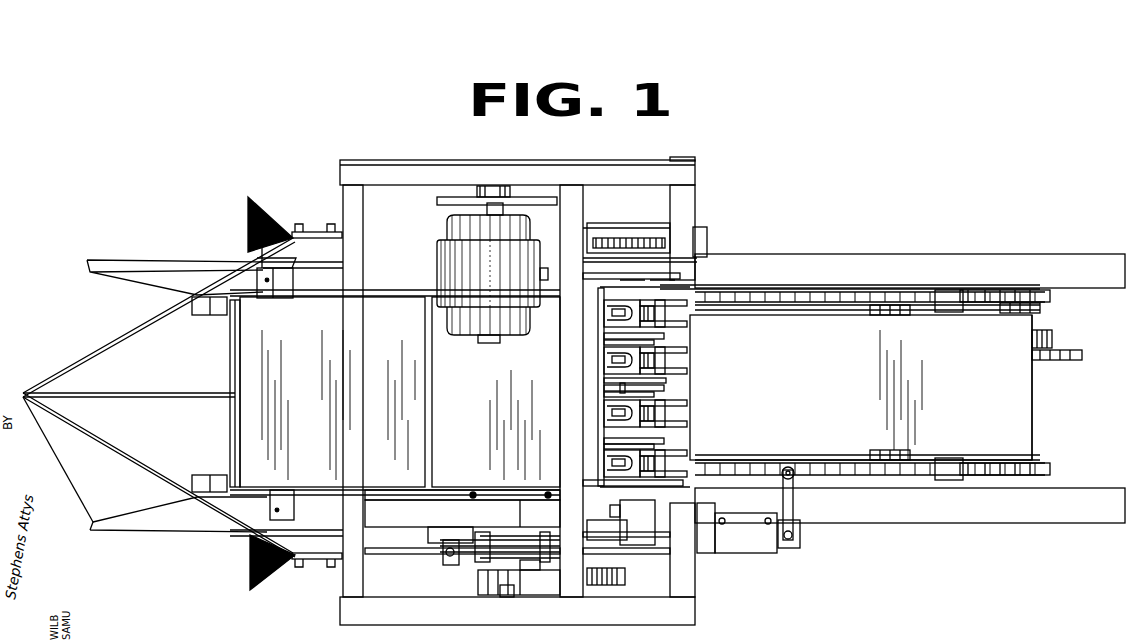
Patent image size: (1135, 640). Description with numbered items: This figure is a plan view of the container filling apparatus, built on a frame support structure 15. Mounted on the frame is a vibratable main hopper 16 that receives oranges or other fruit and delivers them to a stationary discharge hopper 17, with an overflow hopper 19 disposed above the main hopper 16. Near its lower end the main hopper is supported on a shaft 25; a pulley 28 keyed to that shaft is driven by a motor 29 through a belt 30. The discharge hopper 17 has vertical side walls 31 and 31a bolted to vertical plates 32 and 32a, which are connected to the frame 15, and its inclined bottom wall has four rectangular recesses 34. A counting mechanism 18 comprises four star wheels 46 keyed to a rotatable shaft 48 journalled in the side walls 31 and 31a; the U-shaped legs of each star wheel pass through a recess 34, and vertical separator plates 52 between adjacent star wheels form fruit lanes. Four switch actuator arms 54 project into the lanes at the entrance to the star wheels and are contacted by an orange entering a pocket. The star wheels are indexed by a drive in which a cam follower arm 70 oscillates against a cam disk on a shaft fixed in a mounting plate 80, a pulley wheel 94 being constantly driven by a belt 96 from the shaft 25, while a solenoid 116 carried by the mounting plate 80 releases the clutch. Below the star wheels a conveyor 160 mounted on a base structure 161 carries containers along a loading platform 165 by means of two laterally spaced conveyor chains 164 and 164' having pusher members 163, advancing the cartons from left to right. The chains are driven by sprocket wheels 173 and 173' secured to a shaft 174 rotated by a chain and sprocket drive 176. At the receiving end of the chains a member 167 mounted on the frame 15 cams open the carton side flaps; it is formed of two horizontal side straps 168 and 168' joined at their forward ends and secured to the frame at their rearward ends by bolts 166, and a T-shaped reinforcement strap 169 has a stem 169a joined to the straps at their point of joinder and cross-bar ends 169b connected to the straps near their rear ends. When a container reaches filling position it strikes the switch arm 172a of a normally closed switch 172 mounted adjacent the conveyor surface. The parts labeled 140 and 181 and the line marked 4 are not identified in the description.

The frame support structure 15 is at (650, 157).
The vibratable main hopper 16 is at (477, 383).
The stationary discharge hopper 17 is at (625, 380).
The counting mechanism 18 is at (706, 353).
The overflow hopper 19 is at (370, 371).
The shaft 25 is at (505, 186).
The pulley 28 is at (545, 185).
The motor 29 is at (470, 227).
The belt 30 is at (440, 200).
The vertical side wall 31 is at (670, 490).
The vertical side wall 31a is at (660, 287).
The vertical plate 32 is at (593, 488).
The vertical plate 32a is at (590, 282).
The rectangular recesses 34 is at (607, 306).
The star wheels 46 is at (655, 360).
The rotatable shaft 48 is at (645, 394).
The vertical separator plate 52 is at (607, 343).
The switch actuator arms 54 is at (607, 313).
The cam follower arm 70 is at (505, 540).
The mounting plate 80 is at (448, 527).
The pulley wheel 94 is at (608, 570).
The belt 96 is at (480, 582).
The solenoid 116 is at (440, 557).
The chain drive 140 is at (615, 238).
The conveyor 160 is at (873, 279).
The base structure 161 is at (783, 245).
The pusher members 163 is at (218, 312).
The conveyor chain 164 is at (867, 454).
The conveyor chain 164' is at (867, 272).
The loading platform 165 is at (1085, 400).
The bolts 166 is at (330, 225).
The member 167 is at (22, 395).
The horizontal side strap 168 is at (178, 475).
The horizontal side strap 168' is at (175, 325).
The T-shaped reinforcement strap 169 is at (193, 393).
The stem 169a is at (95, 400).
The ends 169b is at (303, 262).
The normally closed switch 172 is at (800, 540).
The switch arm 172a is at (795, 505).
The sprocket wheel 173 is at (1030, 459).
The sprocket wheel 173' is at (1029, 279).
The shaft 174 is at (1035, 310).
The chain and sprocket drive 176 is at (1050, 348).
The conveyor platform 181 is at (845, 389).
The section line 4 is at (265, 503).